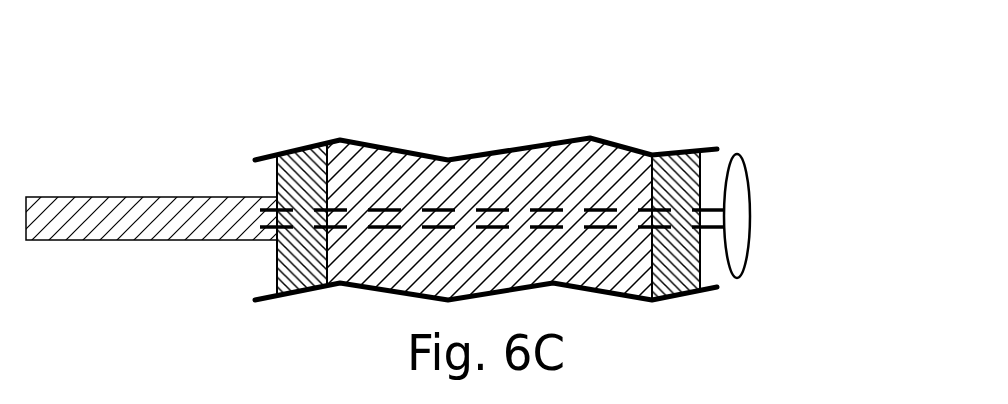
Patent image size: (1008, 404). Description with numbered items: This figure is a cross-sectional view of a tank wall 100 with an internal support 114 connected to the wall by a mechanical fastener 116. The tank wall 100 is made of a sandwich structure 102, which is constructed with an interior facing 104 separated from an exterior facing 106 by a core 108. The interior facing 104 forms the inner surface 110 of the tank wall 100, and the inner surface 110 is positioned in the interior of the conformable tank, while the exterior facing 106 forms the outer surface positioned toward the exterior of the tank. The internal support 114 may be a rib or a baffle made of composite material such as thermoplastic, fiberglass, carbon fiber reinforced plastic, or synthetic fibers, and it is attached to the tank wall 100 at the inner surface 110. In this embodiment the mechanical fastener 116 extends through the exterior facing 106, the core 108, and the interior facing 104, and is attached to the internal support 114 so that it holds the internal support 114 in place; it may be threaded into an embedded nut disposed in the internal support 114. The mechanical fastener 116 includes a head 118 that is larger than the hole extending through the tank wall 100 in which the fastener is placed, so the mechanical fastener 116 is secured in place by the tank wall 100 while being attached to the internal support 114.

The tank wall 100 is at (558, 170).
The sandwich structure 102 is at (487, 156).
The interior facing 104 is at (303, 180).
The exterior facing 106 is at (676, 189).
The core 108 is at (483, 197).
The inner surface 110 is at (266, 275).
The internal support 114 is at (142, 220).
The mechanical fastener 116 is at (602, 228).
The head 118 is at (733, 210).